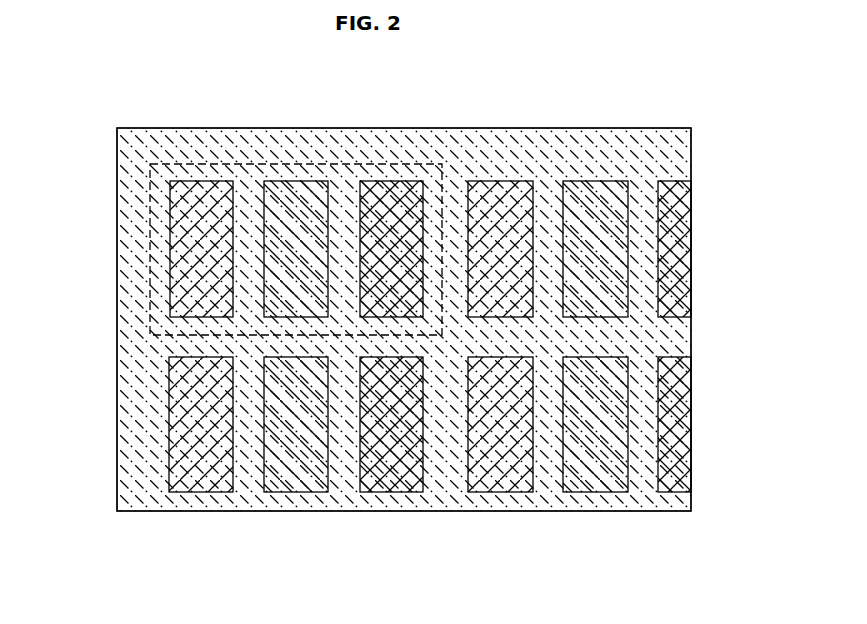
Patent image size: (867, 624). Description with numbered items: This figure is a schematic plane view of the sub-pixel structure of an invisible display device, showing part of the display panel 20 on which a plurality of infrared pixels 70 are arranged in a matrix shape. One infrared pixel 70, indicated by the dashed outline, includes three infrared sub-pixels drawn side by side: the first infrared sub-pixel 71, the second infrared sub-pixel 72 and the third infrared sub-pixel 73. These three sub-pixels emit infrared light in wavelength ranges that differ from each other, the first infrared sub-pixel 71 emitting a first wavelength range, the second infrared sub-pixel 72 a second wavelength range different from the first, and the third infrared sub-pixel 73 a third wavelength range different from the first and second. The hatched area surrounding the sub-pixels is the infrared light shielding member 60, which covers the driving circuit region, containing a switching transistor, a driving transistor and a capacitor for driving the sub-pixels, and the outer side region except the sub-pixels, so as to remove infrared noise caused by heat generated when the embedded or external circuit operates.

The display panel 20 is at (117, 128).
The infrared light shielding member 60 is at (117, 215).
The infrared pixel 70 is at (440, 170).
The first infrared sub-pixel 71 is at (200, 180).
The second infrared sub-pixel 72 is at (299, 180).
The third infrared sub-pixel 73 is at (397, 178).